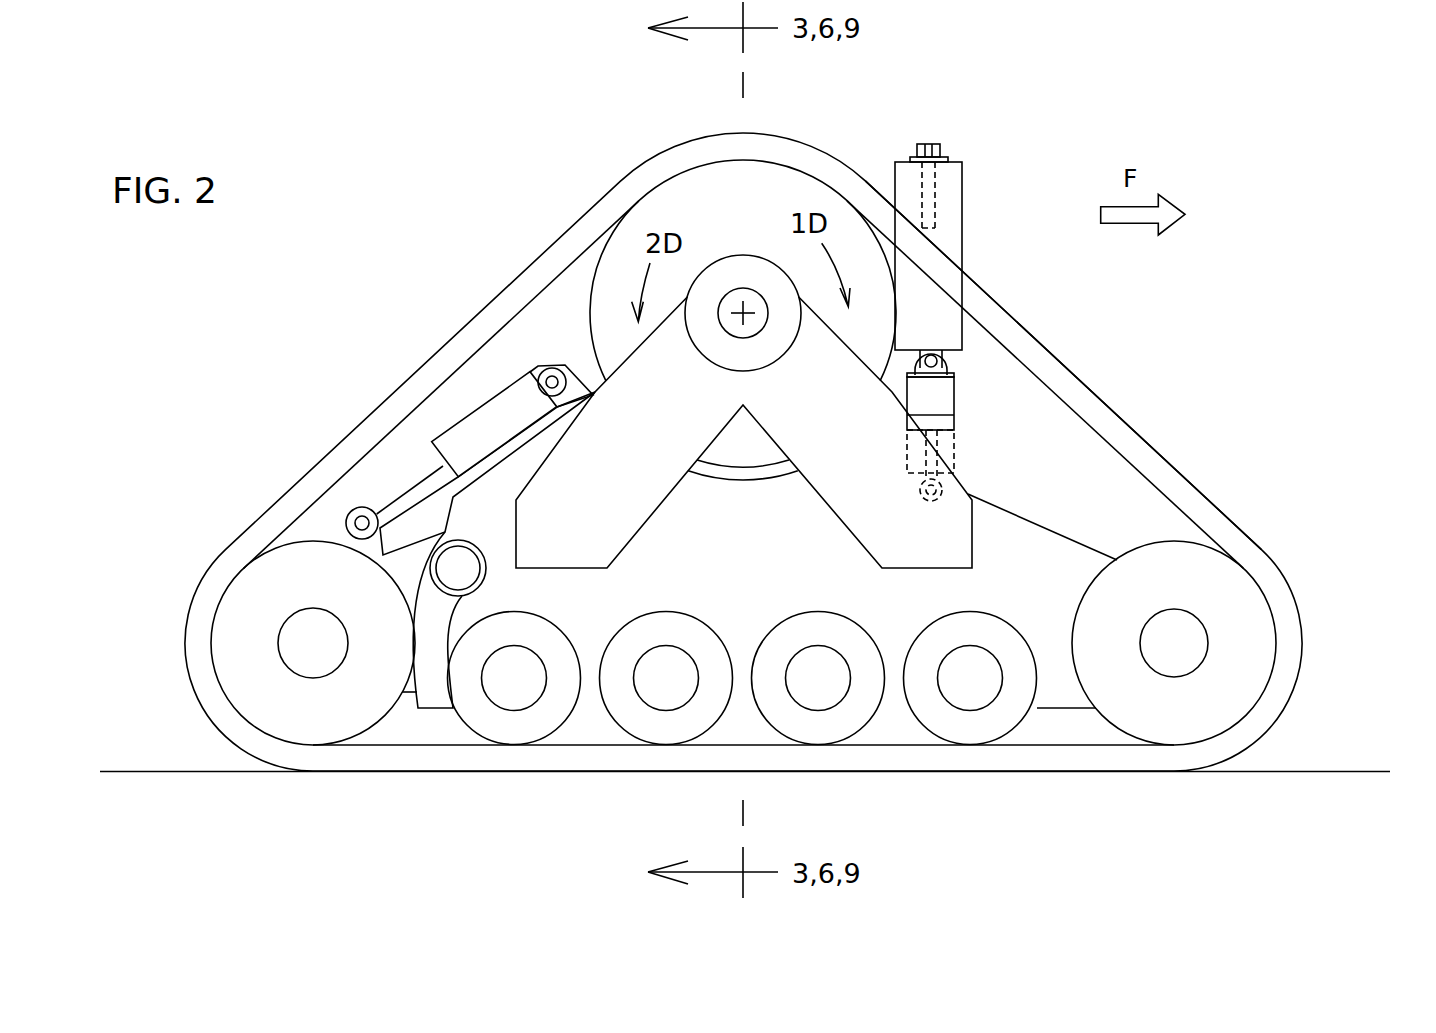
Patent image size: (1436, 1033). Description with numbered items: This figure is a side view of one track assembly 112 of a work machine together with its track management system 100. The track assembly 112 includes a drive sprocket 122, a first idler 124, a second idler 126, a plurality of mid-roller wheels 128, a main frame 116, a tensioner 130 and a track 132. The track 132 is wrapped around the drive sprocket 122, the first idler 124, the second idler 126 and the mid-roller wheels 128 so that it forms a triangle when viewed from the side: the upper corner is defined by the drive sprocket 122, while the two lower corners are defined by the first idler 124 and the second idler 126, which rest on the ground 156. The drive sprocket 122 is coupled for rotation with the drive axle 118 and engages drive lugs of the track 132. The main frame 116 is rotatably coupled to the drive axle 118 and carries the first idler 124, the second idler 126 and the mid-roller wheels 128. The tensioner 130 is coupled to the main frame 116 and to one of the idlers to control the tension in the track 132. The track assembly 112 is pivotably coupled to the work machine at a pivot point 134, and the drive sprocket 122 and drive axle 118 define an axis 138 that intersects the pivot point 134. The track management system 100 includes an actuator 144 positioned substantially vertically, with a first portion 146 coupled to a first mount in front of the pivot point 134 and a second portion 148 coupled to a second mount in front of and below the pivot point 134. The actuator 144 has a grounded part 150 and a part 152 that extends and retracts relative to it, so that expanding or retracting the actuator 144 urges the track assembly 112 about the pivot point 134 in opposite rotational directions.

The track management system 100 is at (1050, 98).
The track assembly 112 is at (404, 149).
The main frame 116 is at (960, 484).
The drive axle 118 is at (757, 339).
The drive sprocket 122 is at (737, 217).
The first idler 124 is at (333, 719).
The second idler 126 is at (1196, 719).
The mid-roller wheels 128 is at (535, 644).
The tensioner 130 is at (475, 407).
The track 132 is at (1160, 443).
The pivot point 134 is at (680, 367).
The axis 138 is at (741, 316).
The actuator 144 is at (983, 385).
The first portion 146 is at (835, 489).
The second portion 148 is at (1005, 420).
The grounded part 150 is at (907, 458).
The extending and retracting part 152 is at (957, 450).
The ground 156 is at (1308, 771).